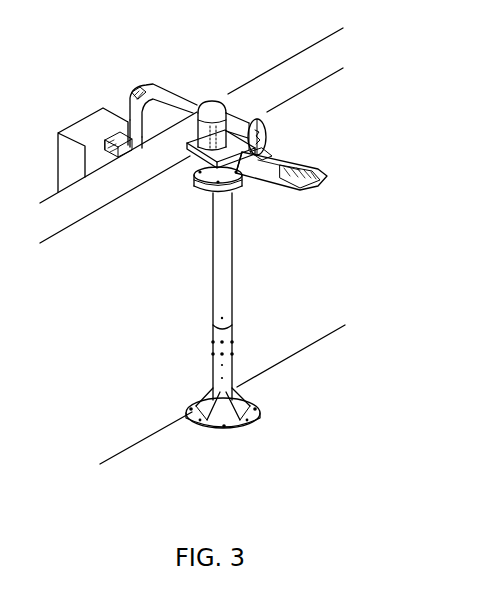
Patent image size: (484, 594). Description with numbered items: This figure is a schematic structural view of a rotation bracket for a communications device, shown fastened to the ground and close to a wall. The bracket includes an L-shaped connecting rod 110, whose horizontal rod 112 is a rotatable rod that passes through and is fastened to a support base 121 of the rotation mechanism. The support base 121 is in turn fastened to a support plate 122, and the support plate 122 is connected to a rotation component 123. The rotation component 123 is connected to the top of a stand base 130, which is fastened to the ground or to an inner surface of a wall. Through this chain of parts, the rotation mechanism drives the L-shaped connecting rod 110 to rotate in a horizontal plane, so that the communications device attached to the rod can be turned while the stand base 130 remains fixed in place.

The L-shaped connecting rod 110 is at (137, 104).
The horizontal rod 112 is at (167, 100).
The support base 121 is at (213, 102).
The support plate 122 is at (293, 158).
The rotation component 123 is at (243, 188).
The stand base 130 is at (226, 274).